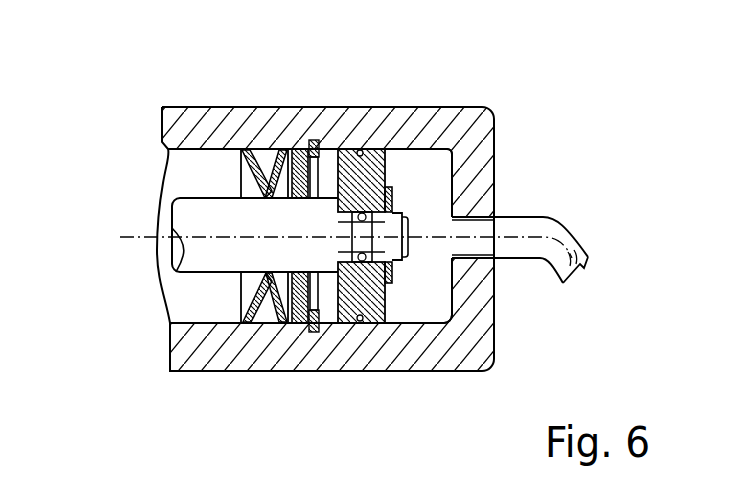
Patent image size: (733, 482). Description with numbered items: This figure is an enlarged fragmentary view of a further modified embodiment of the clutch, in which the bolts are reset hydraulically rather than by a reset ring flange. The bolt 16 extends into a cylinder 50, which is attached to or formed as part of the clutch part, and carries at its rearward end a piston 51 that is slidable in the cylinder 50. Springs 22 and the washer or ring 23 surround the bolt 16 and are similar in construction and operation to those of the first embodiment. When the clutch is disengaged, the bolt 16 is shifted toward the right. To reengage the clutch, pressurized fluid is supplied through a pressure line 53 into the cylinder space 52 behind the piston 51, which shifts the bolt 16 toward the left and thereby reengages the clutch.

The bolt 16 is at (136, 216).
The springs 22 is at (267, 150).
The washer or ring 23 is at (302, 330).
The cylinder 50 is at (407, 107).
The piston 51 is at (387, 160).
The cylinder space 52 is at (430, 303).
The pressure line 53 is at (582, 264).